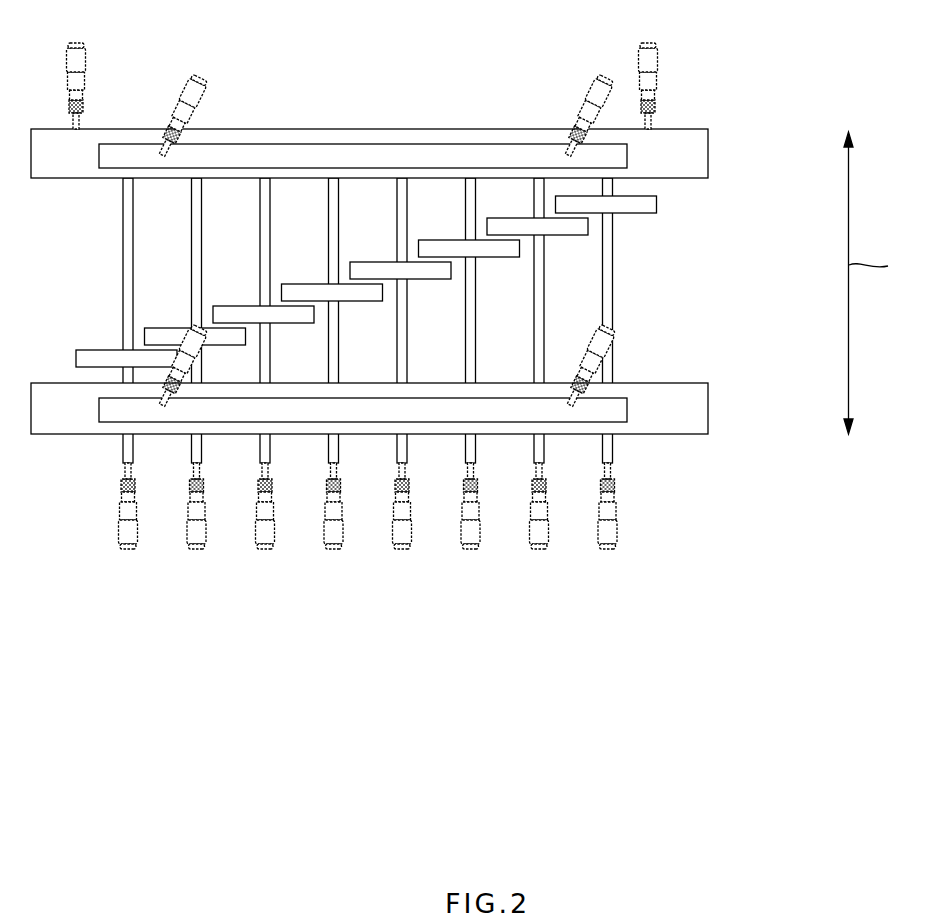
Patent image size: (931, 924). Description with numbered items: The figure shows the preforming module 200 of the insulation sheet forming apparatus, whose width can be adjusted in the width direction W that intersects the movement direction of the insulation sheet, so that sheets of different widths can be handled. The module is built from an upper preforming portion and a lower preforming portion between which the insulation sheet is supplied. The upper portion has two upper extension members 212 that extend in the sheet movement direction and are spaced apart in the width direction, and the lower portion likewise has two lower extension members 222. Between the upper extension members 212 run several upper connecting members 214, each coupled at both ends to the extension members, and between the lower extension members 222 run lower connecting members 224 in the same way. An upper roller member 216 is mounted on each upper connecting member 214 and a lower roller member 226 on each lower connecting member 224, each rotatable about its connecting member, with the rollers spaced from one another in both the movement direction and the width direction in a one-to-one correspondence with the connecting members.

The preforming module 200 is at (326, 78).
The upper extension member 212 is at (432, 240).
The lower extension member 222 is at (683, 145).
The upper connecting member 214 is at (315, 320).
The lower connecting member 224 is at (195, 240).
The upper roller member 216 is at (435, 395).
The lower roller member 226 is at (657, 203).